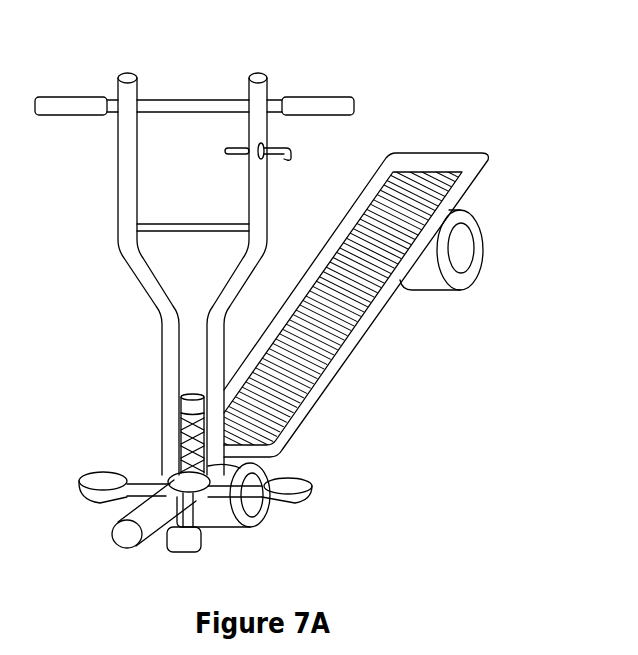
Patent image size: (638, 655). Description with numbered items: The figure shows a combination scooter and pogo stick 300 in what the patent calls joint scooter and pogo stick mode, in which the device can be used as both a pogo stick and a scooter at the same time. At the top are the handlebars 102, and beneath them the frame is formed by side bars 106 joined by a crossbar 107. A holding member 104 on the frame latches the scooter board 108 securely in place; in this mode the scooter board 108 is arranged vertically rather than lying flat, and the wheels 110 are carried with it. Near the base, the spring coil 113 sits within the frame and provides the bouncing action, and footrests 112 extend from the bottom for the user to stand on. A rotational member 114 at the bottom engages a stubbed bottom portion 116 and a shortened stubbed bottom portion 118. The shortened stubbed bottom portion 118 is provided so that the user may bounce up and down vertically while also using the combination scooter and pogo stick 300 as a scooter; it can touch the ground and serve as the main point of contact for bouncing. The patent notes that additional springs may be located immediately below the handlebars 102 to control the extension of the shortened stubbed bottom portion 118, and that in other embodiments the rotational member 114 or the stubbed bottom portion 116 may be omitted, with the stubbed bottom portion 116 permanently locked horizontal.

The combination scooter and pogo stick 300 is at (457, 58).
The handlebars 102 is at (65, 97).
The holding member 104 is at (289, 151).
The side bars 106 is at (248, 200).
The crossbar 107 is at (185, 232).
The scooter board 108 is at (470, 167).
The wheels 110 is at (277, 463).
The footrests 112 is at (305, 498).
The spring coil 113 is at (180, 433).
The rotational member 114 is at (167, 477).
The stubbed bottom portion 116 is at (112, 540).
The shortened stubbed bottom portion 118 is at (190, 556).